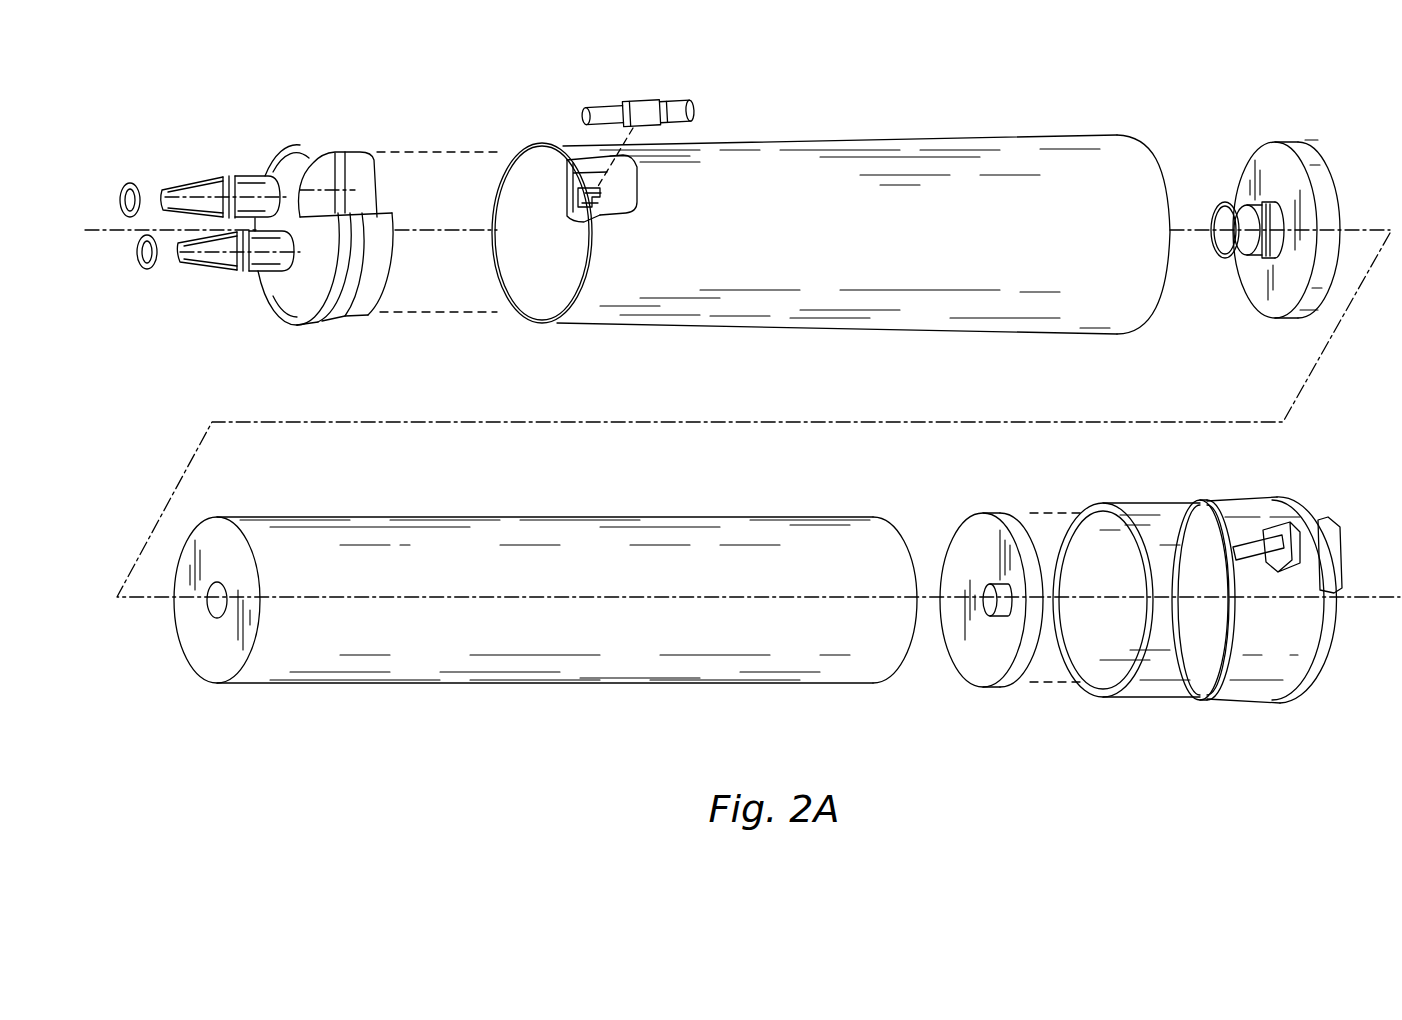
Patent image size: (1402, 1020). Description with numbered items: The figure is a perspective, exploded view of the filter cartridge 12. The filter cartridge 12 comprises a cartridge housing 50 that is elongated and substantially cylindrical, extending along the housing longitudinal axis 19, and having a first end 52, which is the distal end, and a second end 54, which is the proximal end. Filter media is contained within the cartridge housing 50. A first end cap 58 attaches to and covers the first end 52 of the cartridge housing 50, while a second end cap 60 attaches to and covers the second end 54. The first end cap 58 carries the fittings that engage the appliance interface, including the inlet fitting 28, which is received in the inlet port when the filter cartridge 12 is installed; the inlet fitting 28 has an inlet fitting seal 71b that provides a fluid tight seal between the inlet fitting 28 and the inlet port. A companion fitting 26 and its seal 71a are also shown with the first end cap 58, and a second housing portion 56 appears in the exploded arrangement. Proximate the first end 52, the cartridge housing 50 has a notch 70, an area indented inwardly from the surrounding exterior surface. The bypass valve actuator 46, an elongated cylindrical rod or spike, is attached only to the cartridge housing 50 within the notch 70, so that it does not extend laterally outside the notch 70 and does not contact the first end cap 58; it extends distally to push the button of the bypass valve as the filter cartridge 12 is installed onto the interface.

The filter cartridge 12 is at (1020, 90).
The housing longitudinal axis 19 is at (731, 598).
The first nozzle 26 is at (245, 178).
The inlet fitting 28 is at (245, 268).
The bypass valve actuator 46 is at (645, 106).
The cartridge housing 50 is at (862, 140).
The first end 52 is at (567, 144).
The second end 54 is at (1122, 135).
The lower cartridge body 56 is at (573, 518).
The first end cap 58 is at (293, 165).
The second end cap 60 is at (1230, 695).
The notch 70 is at (598, 209).
The first seal ring 71a is at (131, 183).
The inlet fitting seal 71b is at (147, 272).